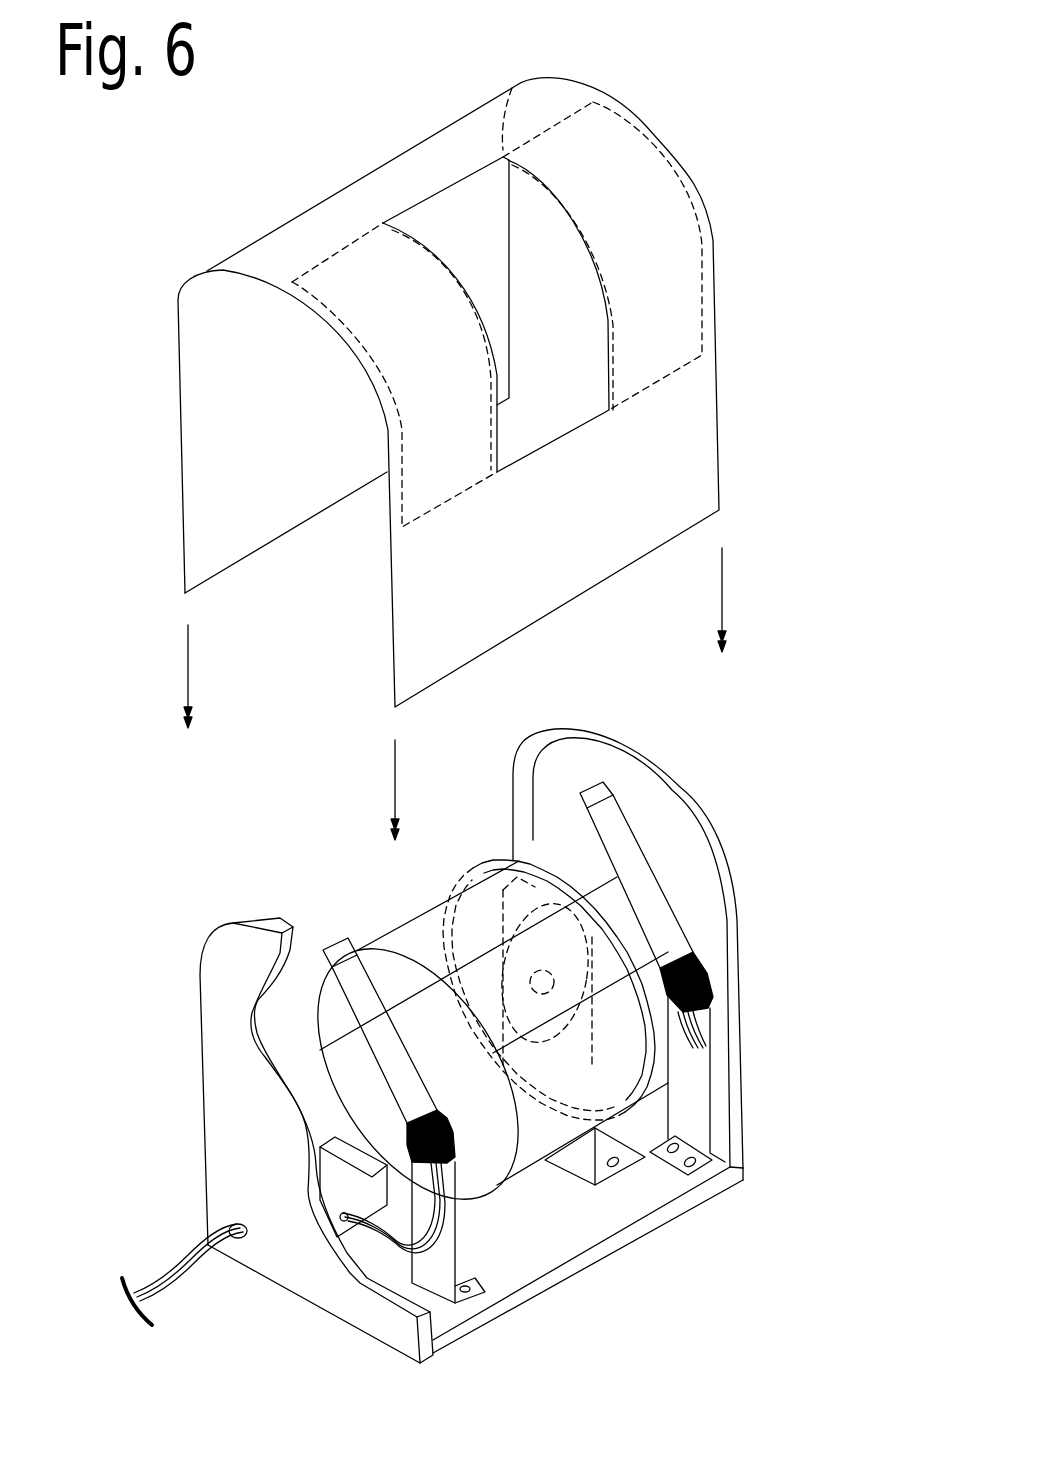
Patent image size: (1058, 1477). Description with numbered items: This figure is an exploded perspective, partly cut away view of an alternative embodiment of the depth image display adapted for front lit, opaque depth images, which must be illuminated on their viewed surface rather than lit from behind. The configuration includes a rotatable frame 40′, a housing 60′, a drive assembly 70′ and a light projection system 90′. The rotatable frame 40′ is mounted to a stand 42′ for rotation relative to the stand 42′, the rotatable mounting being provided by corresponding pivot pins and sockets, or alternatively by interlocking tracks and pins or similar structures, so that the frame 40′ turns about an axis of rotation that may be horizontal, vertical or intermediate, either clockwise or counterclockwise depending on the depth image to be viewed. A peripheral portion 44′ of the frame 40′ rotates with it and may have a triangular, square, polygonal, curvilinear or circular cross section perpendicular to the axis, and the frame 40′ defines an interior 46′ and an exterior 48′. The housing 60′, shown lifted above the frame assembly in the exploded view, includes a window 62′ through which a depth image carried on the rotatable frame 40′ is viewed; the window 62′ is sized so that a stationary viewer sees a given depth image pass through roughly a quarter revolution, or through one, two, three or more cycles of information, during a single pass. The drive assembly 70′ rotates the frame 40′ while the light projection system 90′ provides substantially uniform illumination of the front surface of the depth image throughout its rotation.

The housing 60′ is at (703, 202).
The window 62′ is at (605, 328).
The rotatable frame 40′ is at (533, 857).
The drive assembly 70′ is at (607, 913).
The light projection system 90′ is at (707, 962).
The exterior 48′ is at (622, 1052).
The interior 46′ is at (470, 1078).
The stand 42′ is at (647, 1183).
The peripheral portion 44′ is at (494, 1200).